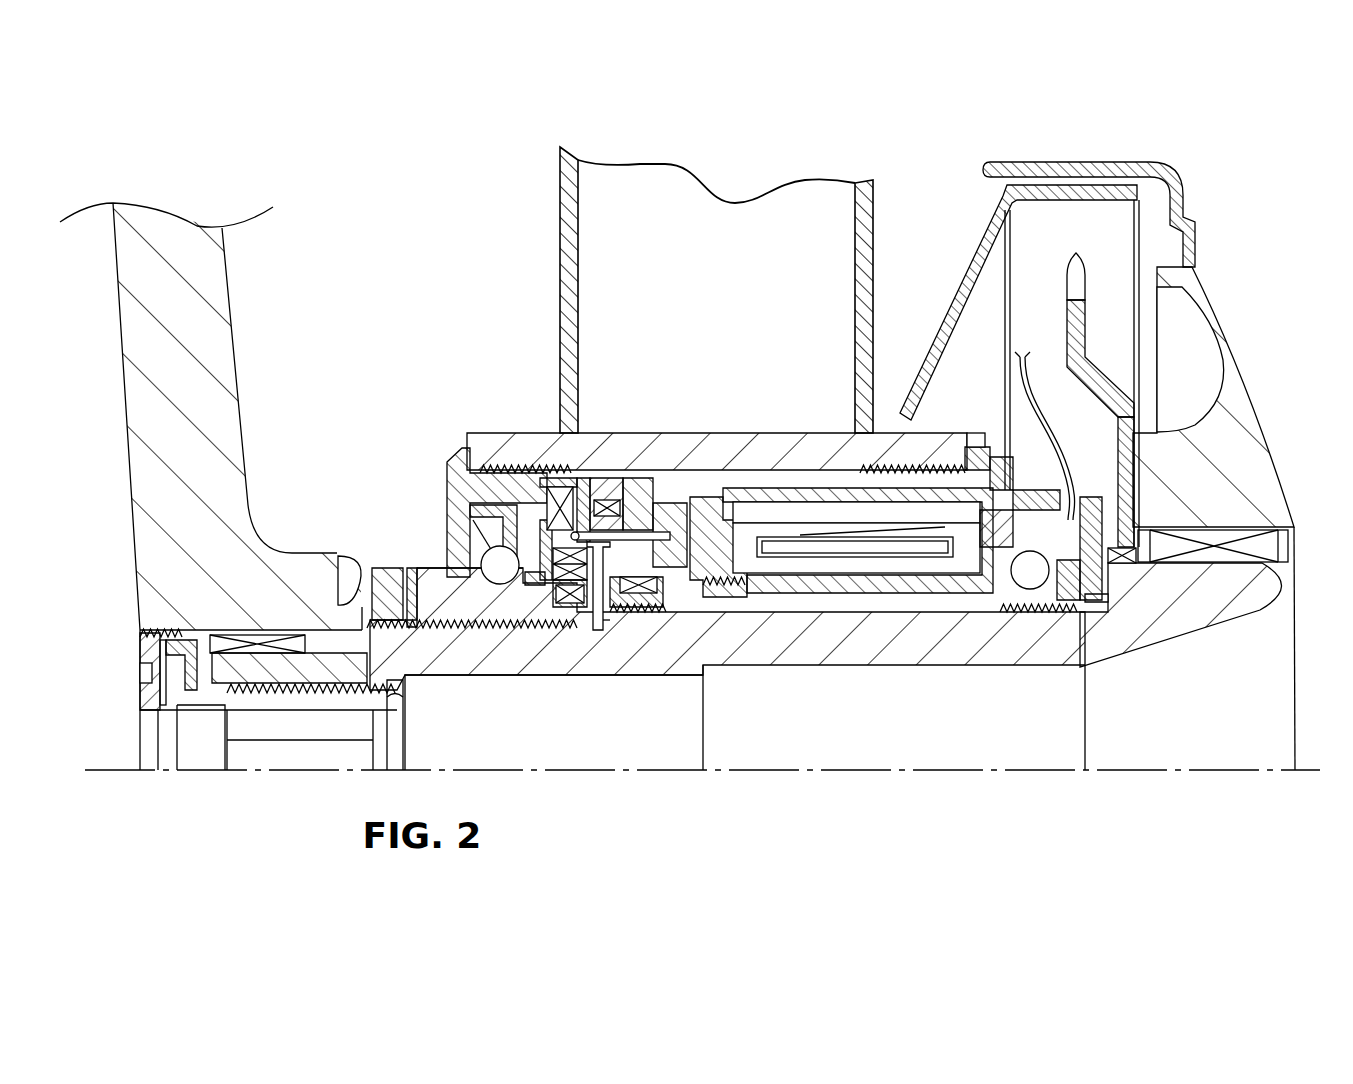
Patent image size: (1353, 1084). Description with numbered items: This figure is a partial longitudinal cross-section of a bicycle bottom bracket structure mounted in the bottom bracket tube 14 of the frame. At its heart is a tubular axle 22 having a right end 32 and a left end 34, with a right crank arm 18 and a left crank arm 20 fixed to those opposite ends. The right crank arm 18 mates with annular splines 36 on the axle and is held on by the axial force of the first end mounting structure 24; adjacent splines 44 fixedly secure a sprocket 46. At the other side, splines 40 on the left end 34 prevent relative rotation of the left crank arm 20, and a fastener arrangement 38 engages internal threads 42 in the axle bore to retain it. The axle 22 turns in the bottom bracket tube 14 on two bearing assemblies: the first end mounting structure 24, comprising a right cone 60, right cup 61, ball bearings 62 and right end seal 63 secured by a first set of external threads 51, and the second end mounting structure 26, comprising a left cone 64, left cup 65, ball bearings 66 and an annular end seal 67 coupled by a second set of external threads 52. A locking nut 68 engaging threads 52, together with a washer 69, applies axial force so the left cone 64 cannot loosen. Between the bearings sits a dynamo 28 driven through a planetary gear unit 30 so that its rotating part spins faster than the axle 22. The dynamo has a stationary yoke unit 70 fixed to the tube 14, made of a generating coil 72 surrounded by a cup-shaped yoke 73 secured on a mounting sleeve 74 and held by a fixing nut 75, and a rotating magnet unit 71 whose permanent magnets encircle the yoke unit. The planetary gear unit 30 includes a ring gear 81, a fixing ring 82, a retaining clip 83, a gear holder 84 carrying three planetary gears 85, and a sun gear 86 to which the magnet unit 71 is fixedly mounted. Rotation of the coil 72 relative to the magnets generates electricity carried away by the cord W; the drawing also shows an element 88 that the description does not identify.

The bottom bracket tube 14 is at (487, 432).
The right crank arm 18 is at (1255, 397).
The left crank arm 20 is at (228, 350).
The axle 22 is at (881, 667).
The first end mounting structure 24 is at (1084, 458).
The second end mounting structure 26 is at (438, 501).
The dynamo 28 is at (842, 707).
The planetary gear unit 30 is at (681, 460).
The right end 32 is at (1180, 633).
The left end 34 is at (308, 668).
The splines 36 is at (1275, 552).
The fastener arrangement 38 is at (122, 656).
The splines 40 is at (262, 637).
The internal threads 42 is at (393, 702).
The splines 44 is at (1128, 565).
The sprocket 46 is at (1087, 327).
The first set of external threads 51 is at (1036, 612).
The second set of external threads 52 is at (528, 567).
The right cone 60 is at (1096, 605).
The right cup 61 is at (987, 435).
The ball bearings 62 is at (1030, 578).
The right end seal 63 is at (1000, 512).
The left cone 64 is at (432, 560).
The left cup 65 is at (440, 462).
The ball bearings 66 is at (493, 578).
The annular end seal 67 is at (447, 498).
The locking nut 68 is at (343, 560).
The washer 69 is at (398, 567).
The yoke unit 70 is at (820, 581).
The magnet unit 71 is at (749, 534).
The generating coil 72 is at (928, 555).
The yoke 73 is at (866, 548).
The mounting sleeve 74 is at (958, 595).
The fixing nut 75 is at (674, 486).
The ring gear 81 is at (598, 476).
The fixing ring 82 is at (594, 582).
The retaining clip 83 is at (542, 533).
The gear holder 84 is at (544, 573).
The planetary gears 85 is at (628, 476).
The sun gear 86 is at (682, 614).
The thread 88 is at (627, 630).
The cord W is at (1031, 392).